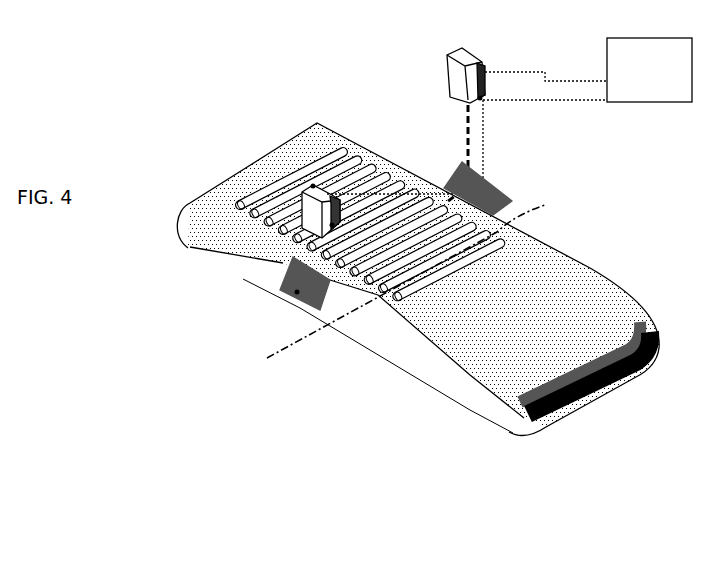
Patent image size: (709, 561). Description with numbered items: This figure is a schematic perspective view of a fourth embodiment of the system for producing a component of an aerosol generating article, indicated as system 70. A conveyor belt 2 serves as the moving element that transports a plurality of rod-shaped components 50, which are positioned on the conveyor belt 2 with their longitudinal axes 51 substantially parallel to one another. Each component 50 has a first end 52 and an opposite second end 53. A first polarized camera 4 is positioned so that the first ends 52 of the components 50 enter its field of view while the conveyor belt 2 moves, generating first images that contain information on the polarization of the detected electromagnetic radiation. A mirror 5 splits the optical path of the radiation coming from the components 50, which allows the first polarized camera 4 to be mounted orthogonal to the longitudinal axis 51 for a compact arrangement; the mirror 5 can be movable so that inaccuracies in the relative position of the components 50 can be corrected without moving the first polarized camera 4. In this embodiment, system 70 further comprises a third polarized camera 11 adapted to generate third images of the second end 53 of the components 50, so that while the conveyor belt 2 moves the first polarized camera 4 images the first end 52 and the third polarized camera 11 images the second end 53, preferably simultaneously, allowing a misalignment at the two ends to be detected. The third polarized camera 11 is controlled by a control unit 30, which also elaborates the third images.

The system 70 is at (200, 103).
The conveyor belt 2 is at (535, 323).
The first polarized camera 4 is at (458, 81).
The mirror 5 is at (508, 179).
The third polarized camera 11 is at (316, 182).
The control unit 30 is at (653, 88).
The component 50 is at (250, 224).
The longitudinal axis 51 is at (537, 210).
The first end 52 is at (487, 233).
The second end 53 is at (383, 293).